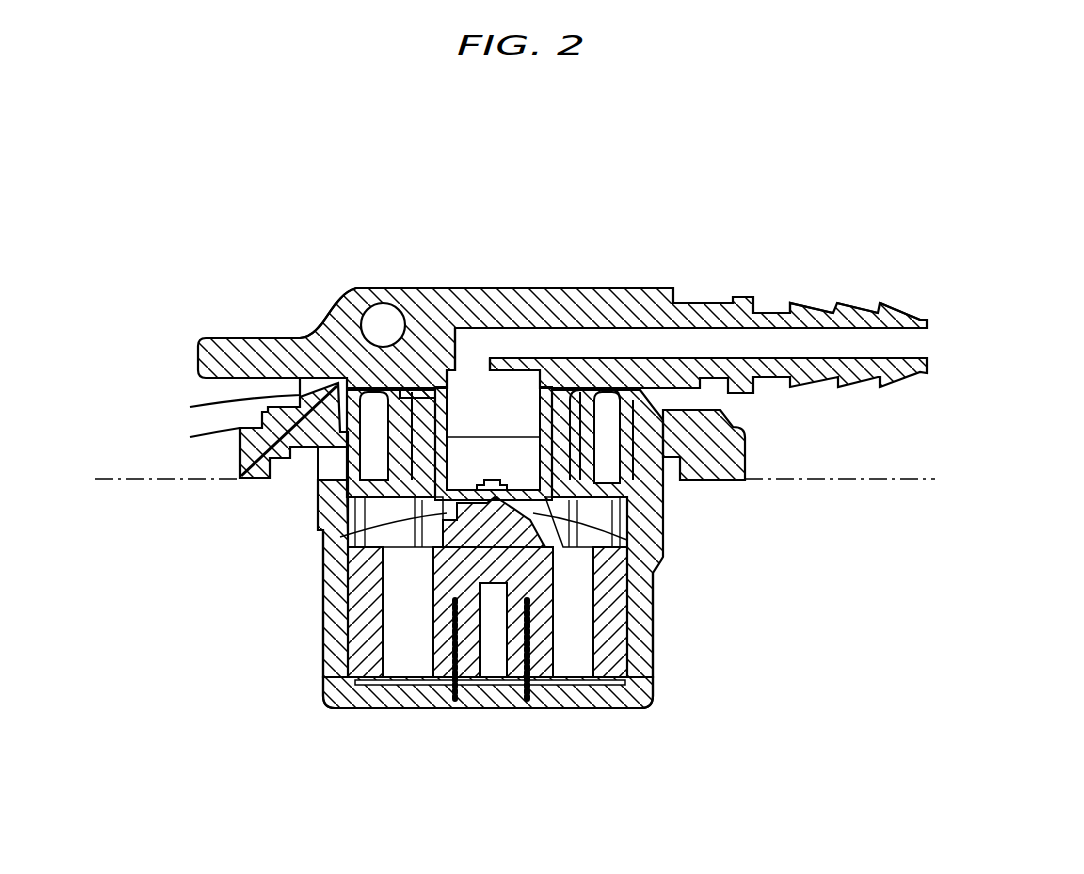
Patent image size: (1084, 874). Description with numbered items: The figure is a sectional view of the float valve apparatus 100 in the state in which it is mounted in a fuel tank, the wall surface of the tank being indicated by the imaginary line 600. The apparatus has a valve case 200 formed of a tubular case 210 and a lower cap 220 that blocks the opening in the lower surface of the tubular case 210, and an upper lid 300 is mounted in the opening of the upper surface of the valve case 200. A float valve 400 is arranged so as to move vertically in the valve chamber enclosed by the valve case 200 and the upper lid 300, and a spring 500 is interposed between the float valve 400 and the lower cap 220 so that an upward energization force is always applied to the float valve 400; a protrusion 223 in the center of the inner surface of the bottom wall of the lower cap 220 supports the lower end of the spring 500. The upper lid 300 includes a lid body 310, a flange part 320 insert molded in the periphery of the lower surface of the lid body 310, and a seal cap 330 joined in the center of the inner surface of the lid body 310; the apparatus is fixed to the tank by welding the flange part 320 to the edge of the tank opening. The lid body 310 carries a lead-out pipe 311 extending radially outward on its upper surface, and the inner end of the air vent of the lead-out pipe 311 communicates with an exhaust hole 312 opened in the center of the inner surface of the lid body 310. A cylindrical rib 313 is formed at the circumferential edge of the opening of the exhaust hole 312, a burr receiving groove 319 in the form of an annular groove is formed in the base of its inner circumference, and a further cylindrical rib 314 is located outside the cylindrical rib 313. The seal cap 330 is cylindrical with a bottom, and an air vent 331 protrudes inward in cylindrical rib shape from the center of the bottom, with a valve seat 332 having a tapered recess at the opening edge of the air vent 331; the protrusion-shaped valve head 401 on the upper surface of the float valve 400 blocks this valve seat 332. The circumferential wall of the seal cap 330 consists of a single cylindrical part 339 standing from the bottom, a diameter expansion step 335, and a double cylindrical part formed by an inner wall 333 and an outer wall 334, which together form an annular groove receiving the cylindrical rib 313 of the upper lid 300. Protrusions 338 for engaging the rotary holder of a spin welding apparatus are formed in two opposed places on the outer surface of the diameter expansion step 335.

The float valve apparatus 100 is at (704, 236).
The valve case 200 is at (450, 805).
The tubular case 210 is at (322, 660).
The lower cap 220 is at (415, 707).
The protrusion 223 is at (486, 708).
The upper lid 300 is at (559, 287).
The lid body 310 is at (437, 340).
The lead-out pipe 311 is at (878, 303).
The exhaust hole 312 is at (489, 365).
The cylindrical rib 313 is at (592, 398).
The cylindrical rib 314 is at (298, 403).
The burr receiving groove 319 is at (403, 292).
The flange part 320 is at (736, 452).
The seal cap 330 is at (342, 512).
The air vent 331 is at (450, 385).
The valve seat 332 is at (500, 512).
The inner wall 333 is at (525, 398).
The outer wall 334 is at (585, 412).
The diameter expansion step 335 is at (255, 442).
The protrusions 338 is at (540, 508).
The single cylindrical part 339 is at (462, 518).
The float valve 400 is at (364, 629).
The valve head 401 is at (352, 552).
The spring 500 is at (526, 700).
The imaginary line 600 is at (104, 478).